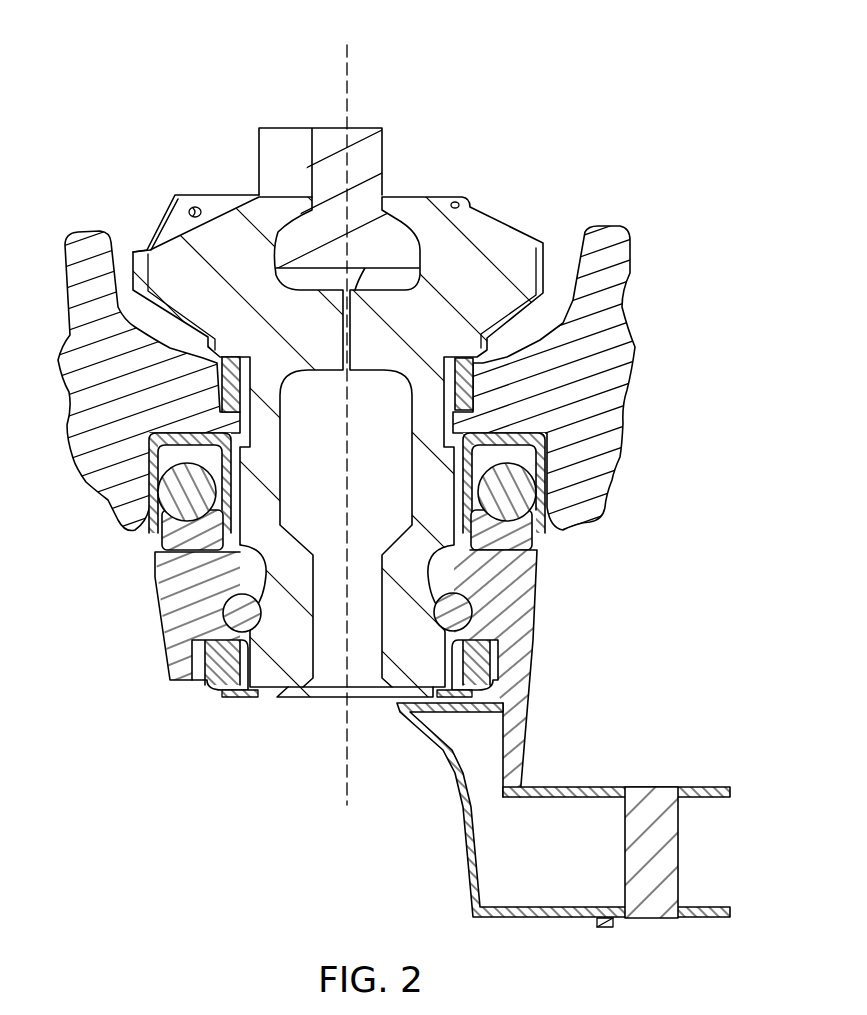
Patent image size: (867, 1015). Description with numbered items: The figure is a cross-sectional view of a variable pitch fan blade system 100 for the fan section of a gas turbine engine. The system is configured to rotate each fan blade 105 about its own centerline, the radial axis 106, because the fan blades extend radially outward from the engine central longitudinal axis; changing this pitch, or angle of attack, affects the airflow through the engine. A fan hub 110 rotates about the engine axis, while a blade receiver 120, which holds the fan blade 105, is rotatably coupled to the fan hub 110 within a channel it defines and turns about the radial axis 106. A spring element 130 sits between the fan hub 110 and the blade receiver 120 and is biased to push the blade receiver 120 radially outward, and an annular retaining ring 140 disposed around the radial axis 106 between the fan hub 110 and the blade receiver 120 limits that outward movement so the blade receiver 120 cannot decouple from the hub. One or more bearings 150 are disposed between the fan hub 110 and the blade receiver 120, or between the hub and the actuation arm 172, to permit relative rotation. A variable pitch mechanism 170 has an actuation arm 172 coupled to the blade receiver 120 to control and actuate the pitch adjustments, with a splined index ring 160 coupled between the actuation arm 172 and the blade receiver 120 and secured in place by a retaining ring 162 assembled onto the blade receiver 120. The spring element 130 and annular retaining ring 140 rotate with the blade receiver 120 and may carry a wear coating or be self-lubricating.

The variable pitch fan blade system 100 is at (135, 80).
The fan blade 105 is at (365, 167).
The radial axis 106 is at (346, 92).
The fan hub 110 is at (82, 308).
The blade receiver 120 is at (165, 263).
The spring element 130 is at (224, 380).
The annular retaining ring 140 is at (240, 617).
The bearing 150 is at (138, 554).
The splined index ring 160 is at (463, 665).
The retaining ring 162 is at (233, 697).
The variable pitch mechanism 170 is at (658, 690).
The actuation arm 172 is at (525, 673).